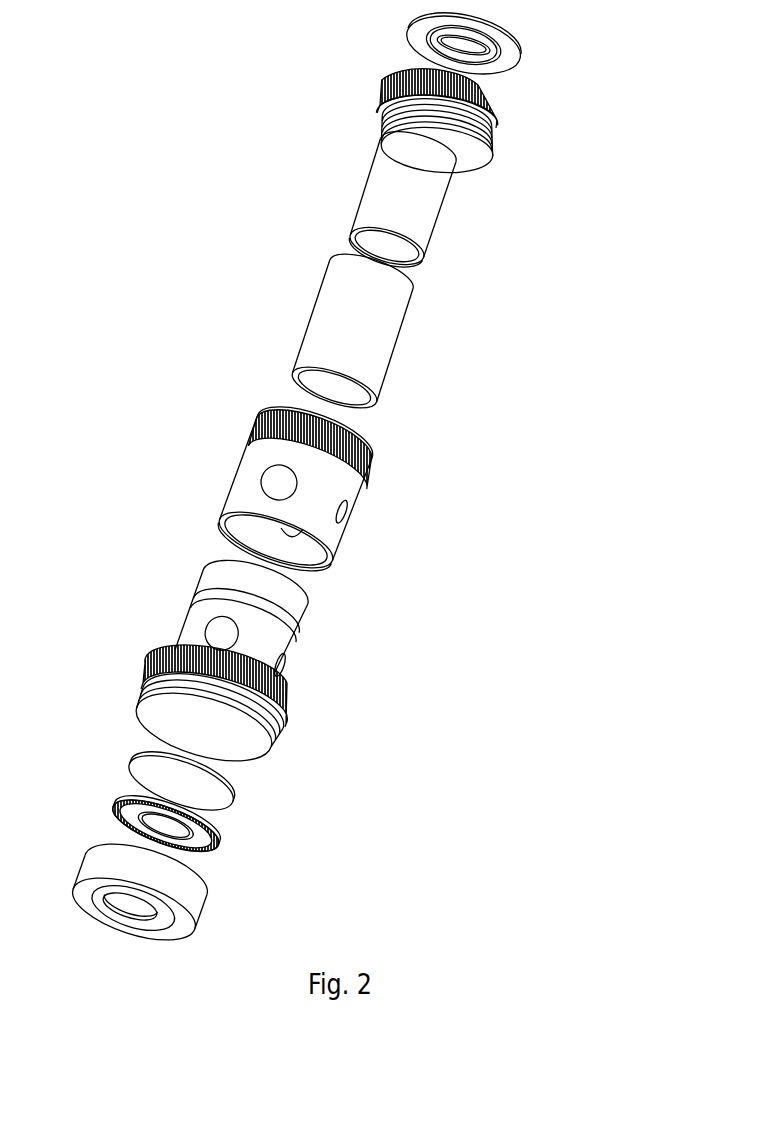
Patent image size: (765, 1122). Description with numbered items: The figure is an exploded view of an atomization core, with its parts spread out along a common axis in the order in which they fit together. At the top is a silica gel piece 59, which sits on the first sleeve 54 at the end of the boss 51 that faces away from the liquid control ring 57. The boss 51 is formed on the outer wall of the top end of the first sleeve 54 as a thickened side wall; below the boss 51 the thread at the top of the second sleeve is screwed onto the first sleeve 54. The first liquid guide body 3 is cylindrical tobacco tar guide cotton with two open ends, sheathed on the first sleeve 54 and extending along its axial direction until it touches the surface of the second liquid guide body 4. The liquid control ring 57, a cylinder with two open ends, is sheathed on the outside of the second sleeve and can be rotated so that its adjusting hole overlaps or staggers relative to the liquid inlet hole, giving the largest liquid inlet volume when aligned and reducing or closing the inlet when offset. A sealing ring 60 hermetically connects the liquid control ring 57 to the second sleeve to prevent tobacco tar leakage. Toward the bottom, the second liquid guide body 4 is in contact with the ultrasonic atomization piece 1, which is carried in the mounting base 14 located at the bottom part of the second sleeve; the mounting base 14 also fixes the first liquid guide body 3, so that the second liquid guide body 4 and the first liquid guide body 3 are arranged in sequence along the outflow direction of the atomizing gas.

The silica gel piece 59 is at (521, 50).
The boss 51 is at (478, 103).
The liquid control ring 57 is at (501, 202).
The first liquid guide body 3 is at (360, 326).
The first sleeve 54 is at (313, 500).
The sealing ring 60 is at (253, 638).
The second liquid guide body 4 is at (222, 773).
The ultrasonic atomization piece 1 is at (218, 835).
The mounting base 14 is at (177, 892).